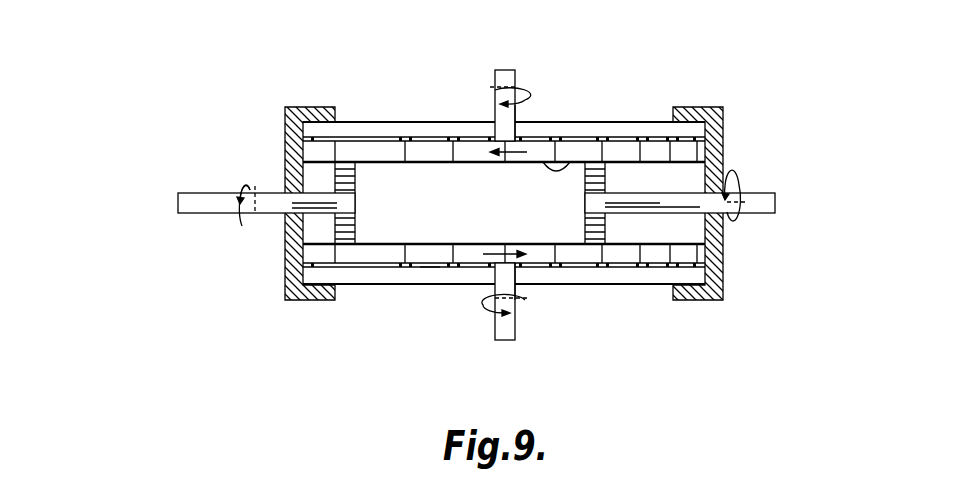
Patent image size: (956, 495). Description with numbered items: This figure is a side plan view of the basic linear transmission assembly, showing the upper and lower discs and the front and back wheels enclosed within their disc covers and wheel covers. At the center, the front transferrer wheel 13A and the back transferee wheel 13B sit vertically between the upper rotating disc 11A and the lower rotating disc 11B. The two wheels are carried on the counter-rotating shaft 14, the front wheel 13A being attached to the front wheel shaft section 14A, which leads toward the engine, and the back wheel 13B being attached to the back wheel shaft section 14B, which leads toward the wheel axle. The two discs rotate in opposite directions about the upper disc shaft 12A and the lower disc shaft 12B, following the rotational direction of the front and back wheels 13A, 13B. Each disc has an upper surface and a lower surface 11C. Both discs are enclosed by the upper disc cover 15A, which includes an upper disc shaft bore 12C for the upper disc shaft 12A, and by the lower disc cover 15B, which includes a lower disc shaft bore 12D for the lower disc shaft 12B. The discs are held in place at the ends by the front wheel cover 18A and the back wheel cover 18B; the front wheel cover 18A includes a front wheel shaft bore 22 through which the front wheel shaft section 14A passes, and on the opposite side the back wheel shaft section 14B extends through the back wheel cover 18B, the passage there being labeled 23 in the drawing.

The upper rotating disc 11A is at (654, 150).
The lower rotating disc 11B is at (352, 140).
The lower surface 11C is at (575, 165).
The upper disc shaft 12A is at (497, 78).
The lower disc shaft 12B is at (441, 283).
The upper disc shaft bore 12C is at (515, 118).
The lower disc shaft bore 12D is at (517, 288).
The front transferrer wheel 13A is at (345, 219).
The back transferee wheel 13B is at (601, 218).
The counter-rotating shaft 14 is at (447, 188).
The front wheel shaft section 14A is at (219, 186).
The back wheel shaft section 14B is at (720, 188).
The upper disc cover 15A is at (440, 126).
The lower disc cover 15B is at (372, 278).
The front wheel cover 18A is at (286, 142).
The back wheel cover 18B is at (723, 142).
The front wheel shaft bore 22 is at (287, 192).
The right shaft key 23 is at (737, 216).